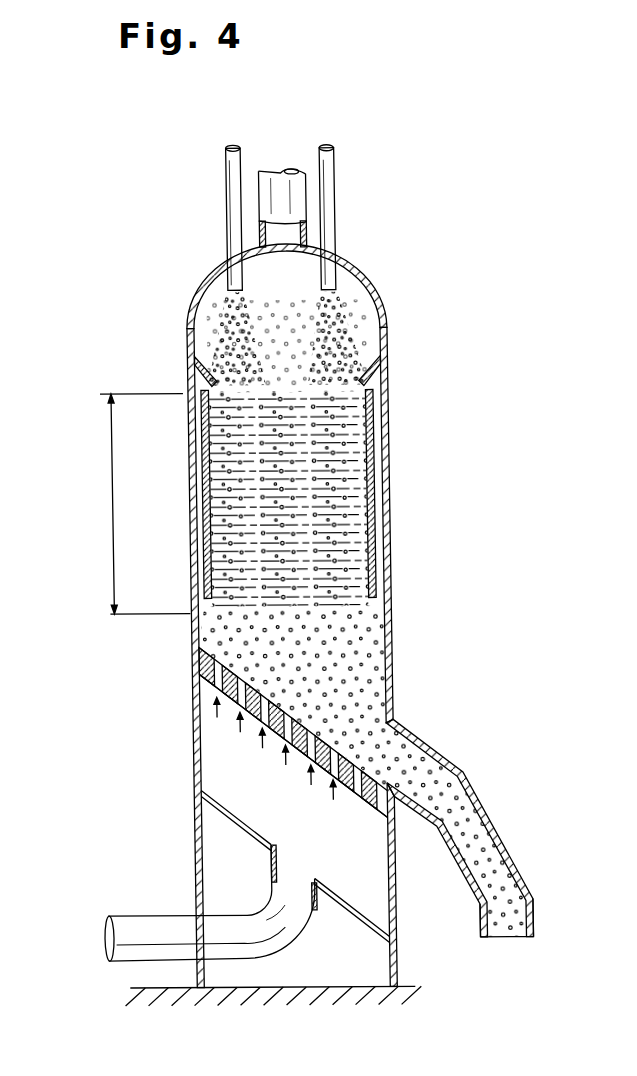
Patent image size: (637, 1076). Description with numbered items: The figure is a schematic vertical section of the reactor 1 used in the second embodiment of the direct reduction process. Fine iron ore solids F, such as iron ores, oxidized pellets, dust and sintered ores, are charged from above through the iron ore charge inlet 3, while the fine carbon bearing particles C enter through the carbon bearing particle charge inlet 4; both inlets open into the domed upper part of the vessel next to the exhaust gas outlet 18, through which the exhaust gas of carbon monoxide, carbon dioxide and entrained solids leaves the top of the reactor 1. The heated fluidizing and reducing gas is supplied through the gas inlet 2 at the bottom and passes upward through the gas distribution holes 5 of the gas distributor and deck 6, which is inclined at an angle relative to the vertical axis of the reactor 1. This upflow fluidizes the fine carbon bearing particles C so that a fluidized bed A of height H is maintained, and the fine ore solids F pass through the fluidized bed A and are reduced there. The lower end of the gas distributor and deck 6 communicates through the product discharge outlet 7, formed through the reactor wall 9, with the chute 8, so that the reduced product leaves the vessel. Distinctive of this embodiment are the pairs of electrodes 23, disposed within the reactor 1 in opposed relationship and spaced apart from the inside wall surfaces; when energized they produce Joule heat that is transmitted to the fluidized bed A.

The reactor 1 is at (383, 293).
The gas inlet 2 is at (258, 945).
The iron ore charge inlet 3 is at (233, 229).
The carbon bearing particle charge inlet 4 is at (342, 226).
The gas distribution holes 5 is at (216, 683).
The gas distributor and deck 6 is at (322, 769).
The product discharge outlet 7 is at (398, 760).
The chute 8 is at (496, 840).
The reactor wall 9 is at (392, 657).
The exhaust gas outlet 18 is at (302, 196).
The electrodes 23 is at (205, 452).
The fluidized bed A is at (342, 445).
The height of the fluidized bed H is at (145, 504).
The fine iron ore solids F is at (241, 142).
The fine carbon bearing particles C is at (334, 142).